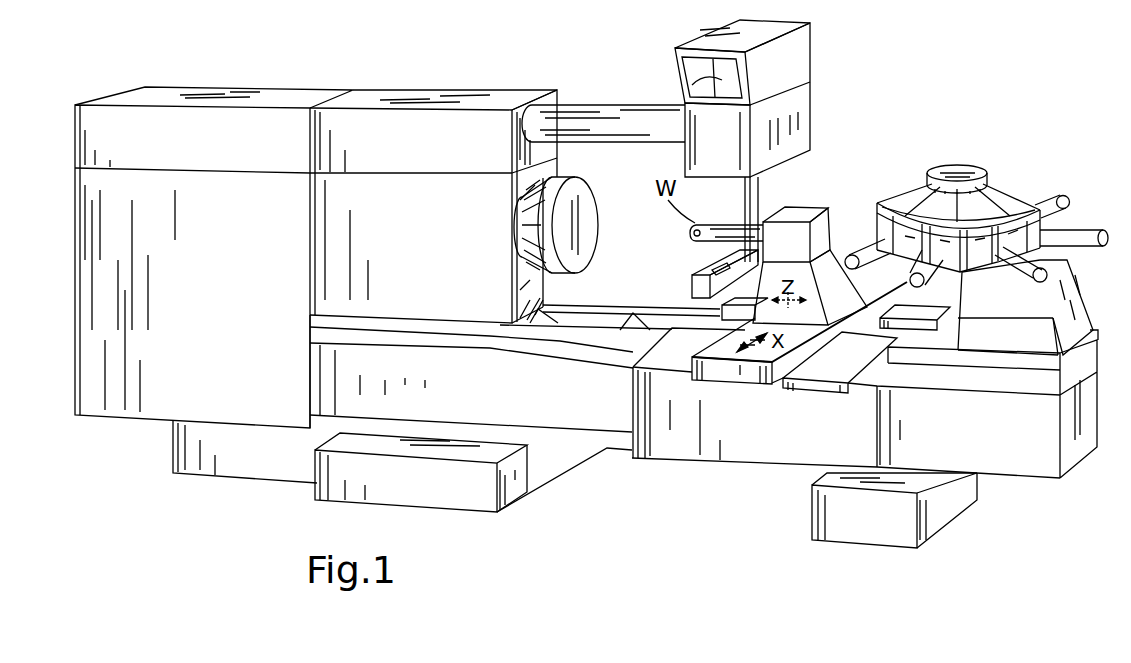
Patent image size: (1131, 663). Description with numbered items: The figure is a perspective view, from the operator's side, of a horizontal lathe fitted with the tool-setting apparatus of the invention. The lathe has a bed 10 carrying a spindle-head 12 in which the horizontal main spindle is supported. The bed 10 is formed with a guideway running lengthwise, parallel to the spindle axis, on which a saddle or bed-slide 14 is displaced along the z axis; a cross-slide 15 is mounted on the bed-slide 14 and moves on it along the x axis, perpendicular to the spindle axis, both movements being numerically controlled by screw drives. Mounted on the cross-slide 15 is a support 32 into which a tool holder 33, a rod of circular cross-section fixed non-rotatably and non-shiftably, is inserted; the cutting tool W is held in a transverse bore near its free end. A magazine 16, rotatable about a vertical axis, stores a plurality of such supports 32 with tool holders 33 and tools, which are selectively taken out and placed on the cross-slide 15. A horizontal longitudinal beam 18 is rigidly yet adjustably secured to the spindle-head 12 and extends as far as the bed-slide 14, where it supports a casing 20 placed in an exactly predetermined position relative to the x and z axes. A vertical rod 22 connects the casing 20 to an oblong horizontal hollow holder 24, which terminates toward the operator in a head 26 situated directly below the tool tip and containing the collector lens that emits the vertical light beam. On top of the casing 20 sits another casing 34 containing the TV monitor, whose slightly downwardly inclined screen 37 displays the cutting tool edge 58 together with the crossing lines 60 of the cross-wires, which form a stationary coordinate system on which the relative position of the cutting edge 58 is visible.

The bed 10 is at (583, 420).
The spindle-head 12 is at (427, 254).
The bed-slide 14 is at (847, 398).
The cross-slide 15 is at (733, 378).
The magazine 16 is at (997, 205).
The longitudinal beam 18 is at (488, 99).
The casing 20 is at (731, 152).
The vertical rod 22 is at (757, 190).
The hollow holder 24 is at (700, 261).
The head 26 is at (685, 286).
The support 32 is at (797, 254).
The tool holder 33 is at (734, 238).
The casing 34 is at (803, 65).
The screen 37 is at (693, 63).
The cutting tool edge 58 is at (690, 90).
The crossing lines 60 is at (771, 58).